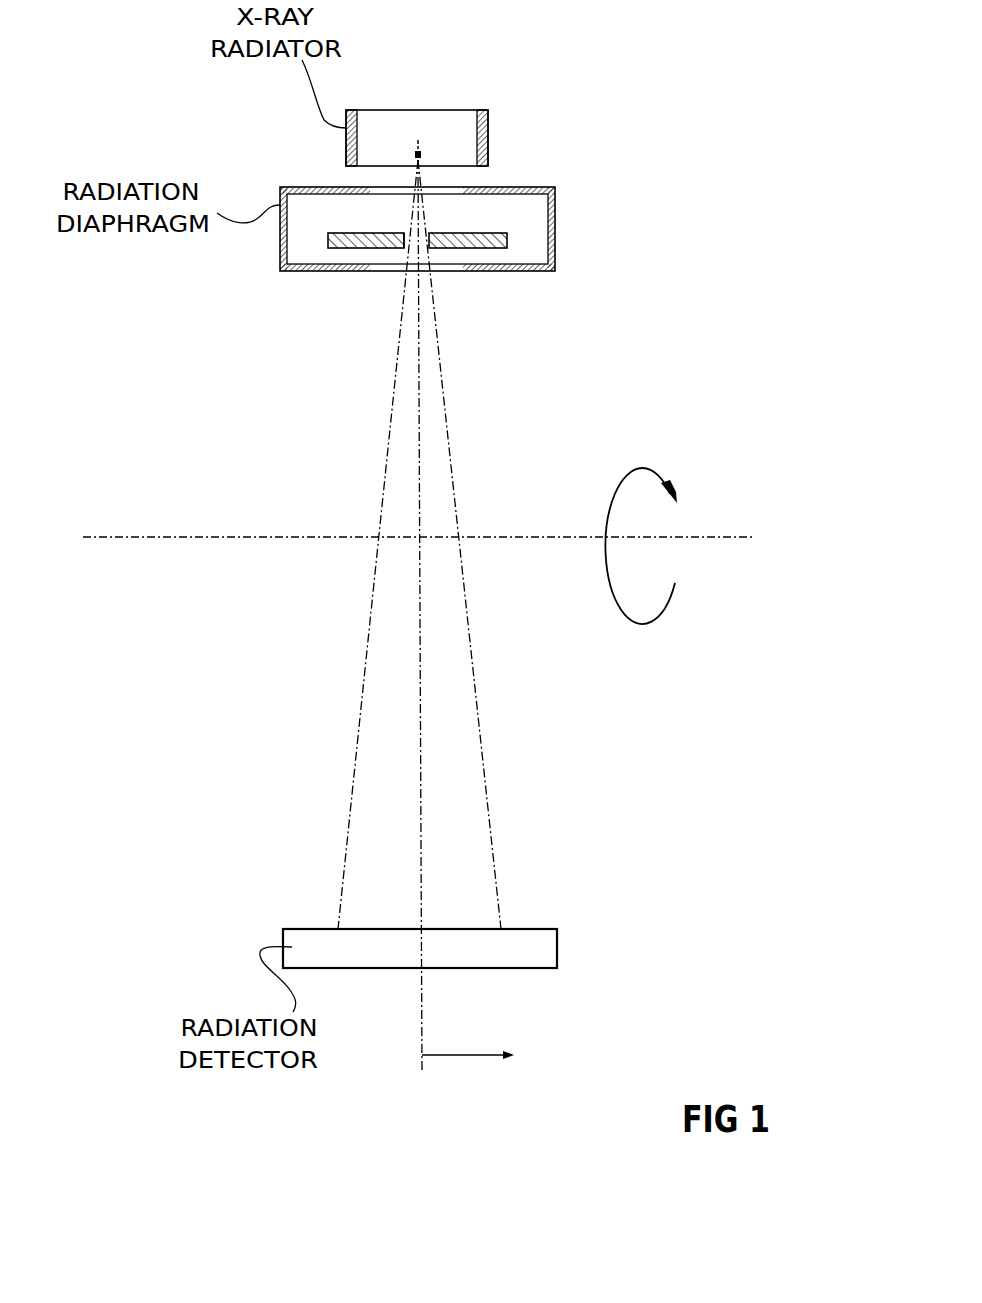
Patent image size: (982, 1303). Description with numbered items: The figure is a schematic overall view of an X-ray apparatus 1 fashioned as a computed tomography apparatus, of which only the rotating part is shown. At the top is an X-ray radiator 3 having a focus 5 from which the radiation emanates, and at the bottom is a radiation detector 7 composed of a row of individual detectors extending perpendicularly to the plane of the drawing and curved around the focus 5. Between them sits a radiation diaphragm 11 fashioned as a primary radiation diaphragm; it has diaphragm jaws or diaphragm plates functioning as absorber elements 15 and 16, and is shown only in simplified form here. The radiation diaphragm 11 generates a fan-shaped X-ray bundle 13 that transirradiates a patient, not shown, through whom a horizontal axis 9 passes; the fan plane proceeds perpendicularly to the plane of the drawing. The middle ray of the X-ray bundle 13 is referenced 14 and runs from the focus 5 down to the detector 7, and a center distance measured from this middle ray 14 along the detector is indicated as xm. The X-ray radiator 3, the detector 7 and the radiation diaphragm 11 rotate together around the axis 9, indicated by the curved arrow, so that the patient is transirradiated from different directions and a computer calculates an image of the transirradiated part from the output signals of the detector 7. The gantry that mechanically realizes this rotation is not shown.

The X-ray apparatus 1 is at (189, 372).
The X-ray radiator 3 is at (489, 128).
The focus 5 is at (419, 140).
The radiation detector 7 is at (548, 952).
The axis 9 is at (730, 537).
The radiation diaphragm 11 is at (555, 210).
The X-ray bundle 13 is at (423, 289).
The middle ray 14 is at (420, 752).
The absorber element 15 is at (507, 241).
The absorber element 16 is at (356, 248).